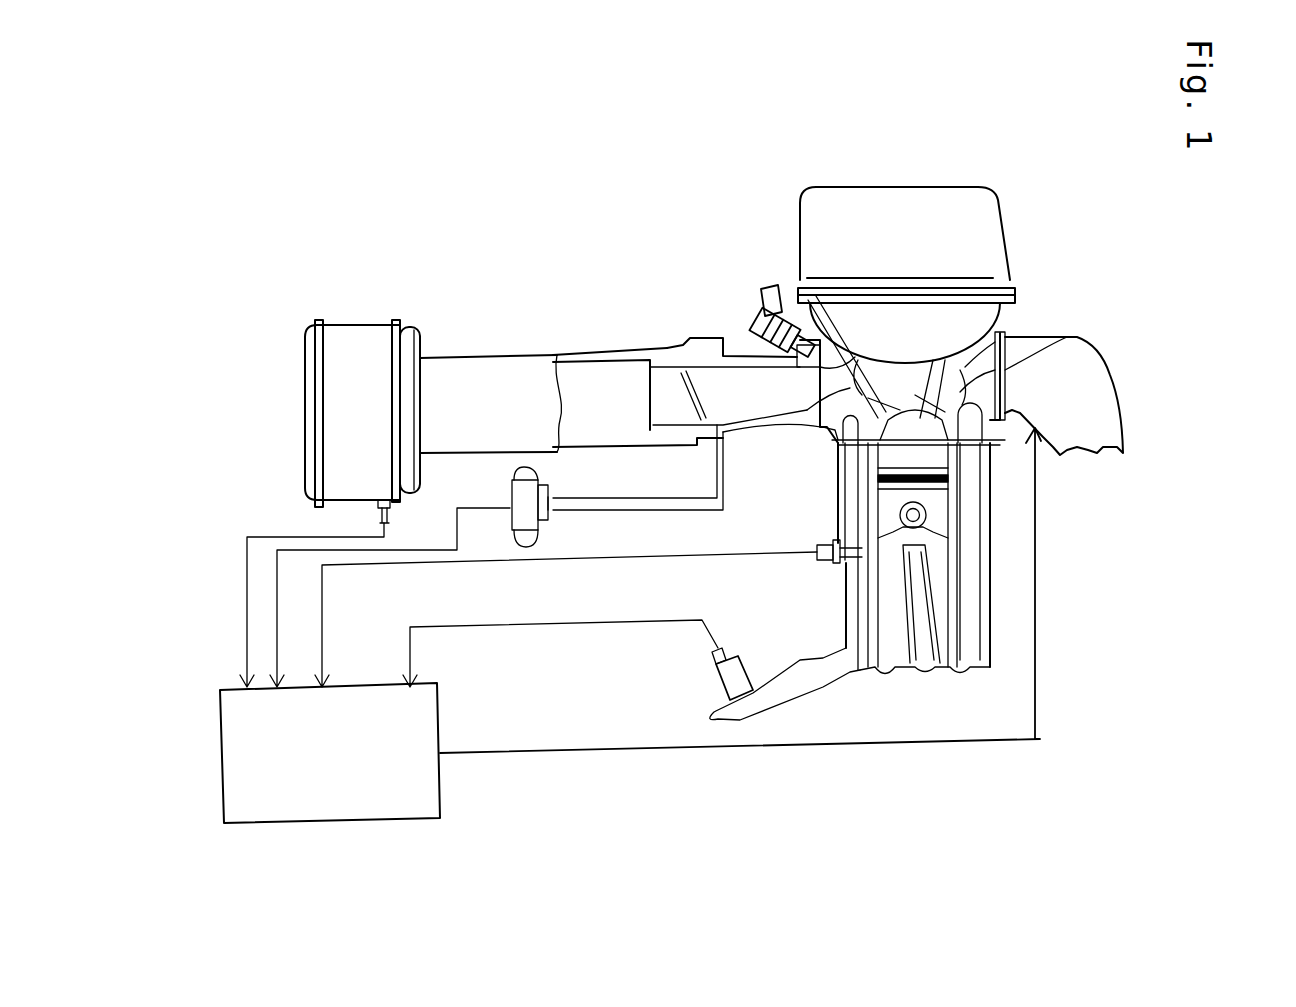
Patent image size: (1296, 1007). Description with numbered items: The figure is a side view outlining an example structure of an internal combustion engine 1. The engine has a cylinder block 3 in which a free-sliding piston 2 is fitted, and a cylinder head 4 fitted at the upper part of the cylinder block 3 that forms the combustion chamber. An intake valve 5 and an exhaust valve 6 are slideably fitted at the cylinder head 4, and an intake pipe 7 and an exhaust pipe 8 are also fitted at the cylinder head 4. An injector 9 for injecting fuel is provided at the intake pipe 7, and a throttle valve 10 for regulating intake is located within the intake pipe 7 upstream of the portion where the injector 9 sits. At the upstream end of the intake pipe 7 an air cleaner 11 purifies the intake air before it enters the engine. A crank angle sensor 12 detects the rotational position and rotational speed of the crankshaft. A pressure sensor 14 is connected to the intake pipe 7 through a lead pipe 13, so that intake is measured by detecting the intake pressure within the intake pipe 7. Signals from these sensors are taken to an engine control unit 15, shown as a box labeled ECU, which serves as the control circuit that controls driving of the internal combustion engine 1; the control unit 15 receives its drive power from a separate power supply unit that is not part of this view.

The internal combustion engine 1 is at (543, 329).
The piston 2 is at (943, 512).
The cylinder block 3 is at (993, 637).
The cylinder head 4 is at (962, 213).
The intake valve 5 is at (873, 350).
The exhaust valve 6 is at (1007, 370).
The intake pipe 7 is at (767, 427).
The exhaust pipe 8 is at (1088, 423).
The injector 9 is at (763, 286).
The throttle valve 10 is at (652, 388).
The air cleaner 11 is at (370, 330).
The crank angle sensor 12 is at (744, 656).
The lead pipe 13 is at (660, 498).
The pressure sensor 14 is at (506, 494).
The engine control unit 15 is at (303, 800).